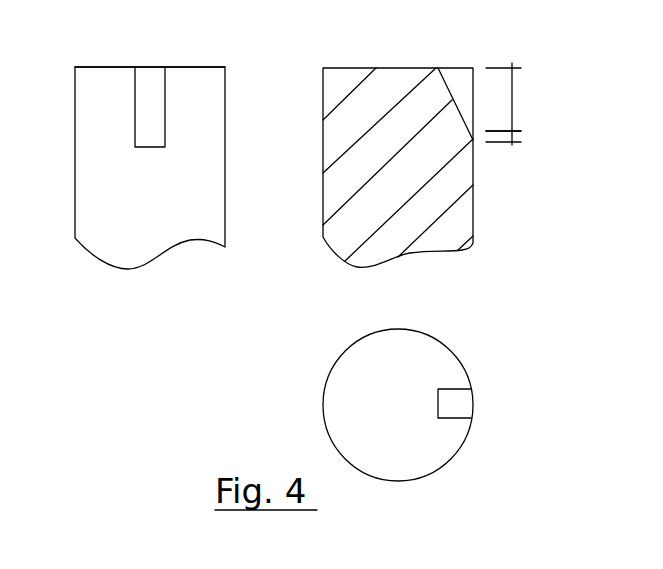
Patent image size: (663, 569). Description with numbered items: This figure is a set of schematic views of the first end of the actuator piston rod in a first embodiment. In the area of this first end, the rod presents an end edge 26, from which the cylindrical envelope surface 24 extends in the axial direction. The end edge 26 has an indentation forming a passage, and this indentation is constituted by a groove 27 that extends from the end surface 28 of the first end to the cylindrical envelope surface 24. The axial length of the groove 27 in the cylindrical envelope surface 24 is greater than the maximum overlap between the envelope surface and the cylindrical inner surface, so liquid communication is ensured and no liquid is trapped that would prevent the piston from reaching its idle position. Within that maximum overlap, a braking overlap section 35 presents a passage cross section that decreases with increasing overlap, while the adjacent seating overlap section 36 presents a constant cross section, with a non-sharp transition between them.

The cylindrical envelope surface 24 is at (120, 123).
The end edge 26 is at (76, 67).
The groove 27 is at (153, 80).
The end surface 28 is at (355, 67).
The braking overlap section 35 is at (518, 97).
The seating overlap section 36 is at (518, 136).